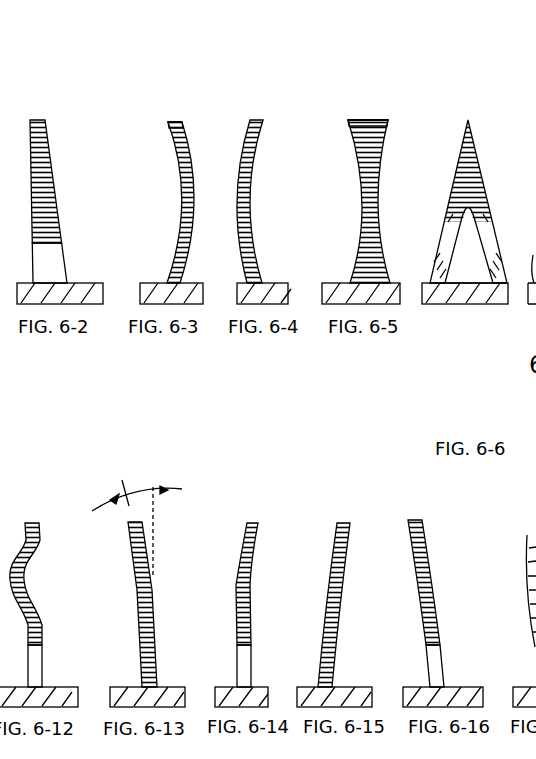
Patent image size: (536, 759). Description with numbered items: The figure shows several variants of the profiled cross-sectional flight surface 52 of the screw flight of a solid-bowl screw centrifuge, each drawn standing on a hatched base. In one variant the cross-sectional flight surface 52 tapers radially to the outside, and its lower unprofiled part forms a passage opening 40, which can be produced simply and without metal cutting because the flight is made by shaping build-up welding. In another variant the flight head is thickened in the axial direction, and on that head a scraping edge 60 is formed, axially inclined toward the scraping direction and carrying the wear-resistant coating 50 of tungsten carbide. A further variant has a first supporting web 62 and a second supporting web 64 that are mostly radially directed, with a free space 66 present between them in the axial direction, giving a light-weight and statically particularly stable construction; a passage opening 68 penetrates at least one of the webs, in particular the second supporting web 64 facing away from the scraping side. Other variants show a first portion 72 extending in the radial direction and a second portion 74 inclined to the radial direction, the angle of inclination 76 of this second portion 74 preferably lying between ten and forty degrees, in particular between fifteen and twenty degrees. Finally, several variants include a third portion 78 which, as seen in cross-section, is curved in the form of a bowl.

In FIG. 6-2, the passage opening 40 is at (55, 262).
In FIG. 6-12, the passage opening 40 is at (42, 666).
In FIG. 6-14, the passage opening 40 is at (248, 668).
In FIG. 6-16, the passage opening 40 is at (440, 668).
In FIG. 6-3, the wear-resistant coating 50 is at (170, 123).
In FIG. 6-5, the wear-resistant coating 50 is at (349, 125).
In FIG. 6-2, the cross-sectional flight surface 52 is at (52, 197).
In FIG. 6-3, the cross-sectional flight surface 52 is at (186, 186).
In FIG. 6-4, the cross-sectional flight surface 52 is at (251, 189).
In FIG. 6-5, the cross-sectional flight surface 52 is at (385, 191).
In FIG. 6-6, the cross-sectional flight surface 52 is at (476, 188).
In FIG. 6-12, the cross-sectional flight surface 52 is at (42, 528).
In FIG. 6-14, the cross-sectional flight surface 52 is at (256, 570).
In FIG. 6-15, the cross-sectional flight surface 52 is at (346, 572).
In FIG. 6-16, the cross-sectional flight surface 52 is at (437, 598).
In FIG. 6-3, the scraping edge 60 is at (160, 121).
In FIG. 6-5, the scraping edge 60 is at (344, 122).
In FIG. 6-6, the first supporting web 62 is at (436, 306).
In FIG. 6-6, the second supporting web 64 is at (497, 306).
In FIG. 6-6, the free space 66 is at (468, 268).
In FIG. 6-6, the passage opening 68 is at (440, 246).
In FIG. 6-13, the first portion 72 is at (162, 612).
In FIG. 6-13, the second portion 74 is at (162, 525).
In FIG. 6-13, the angle of inclination 76 is at (134, 493).
In FIG. 6-5, the third portion 78 is at (310, 133).
In FIG. 6-12, the third portion 78 is at (54, 553).